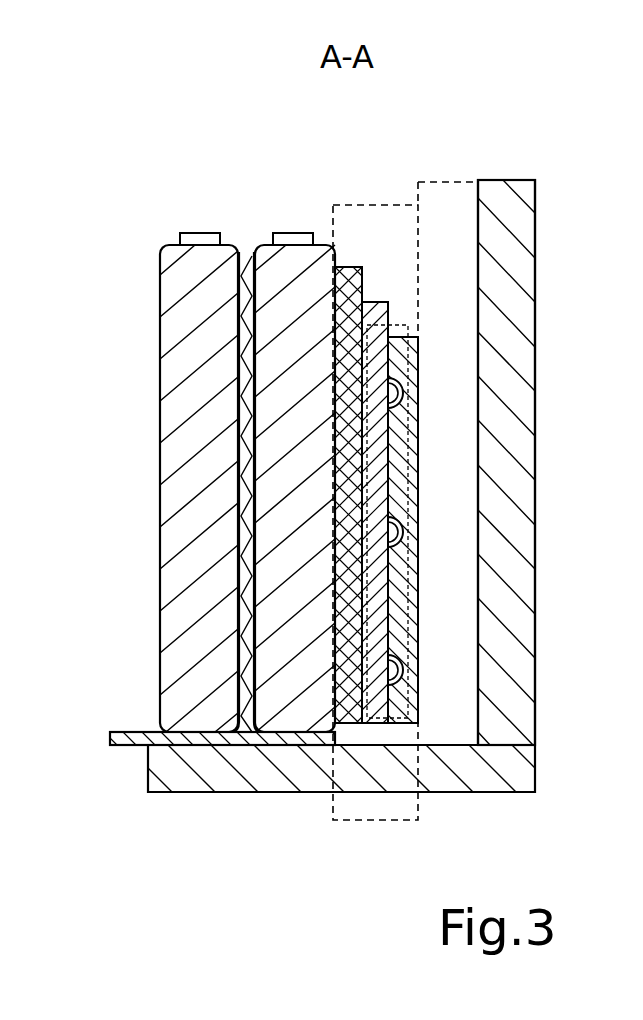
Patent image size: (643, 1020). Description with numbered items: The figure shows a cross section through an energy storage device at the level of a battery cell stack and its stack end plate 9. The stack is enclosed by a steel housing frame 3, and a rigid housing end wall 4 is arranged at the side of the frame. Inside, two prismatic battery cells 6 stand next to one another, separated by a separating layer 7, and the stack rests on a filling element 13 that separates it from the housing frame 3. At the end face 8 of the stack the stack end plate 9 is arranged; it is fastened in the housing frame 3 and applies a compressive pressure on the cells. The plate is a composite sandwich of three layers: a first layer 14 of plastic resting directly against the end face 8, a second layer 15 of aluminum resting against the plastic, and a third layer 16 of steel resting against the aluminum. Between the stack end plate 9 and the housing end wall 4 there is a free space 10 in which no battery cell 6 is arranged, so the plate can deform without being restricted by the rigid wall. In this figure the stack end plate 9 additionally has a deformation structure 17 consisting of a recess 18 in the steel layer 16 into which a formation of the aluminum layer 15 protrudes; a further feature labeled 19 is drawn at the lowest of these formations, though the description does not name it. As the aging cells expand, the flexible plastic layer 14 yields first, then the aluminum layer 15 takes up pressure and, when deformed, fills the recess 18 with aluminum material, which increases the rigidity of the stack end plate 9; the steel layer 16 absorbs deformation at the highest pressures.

The housing frame 3 is at (295, 777).
The housing end wall 4 is at (523, 238).
The battery cell 6 is at (158, 428).
The separating layer 7 is at (247, 253).
The end face 8 is at (325, 530).
The stack end plate 9 is at (377, 205).
The free space 10 is at (464, 463).
The filling element 13 is at (132, 745).
The first layer 14 is at (363, 280).
The second layer 15 is at (390, 313).
The third layer 16 is at (419, 372).
The deformation structure 17 is at (408, 598).
The recess 18 is at (411, 532).
The contact bump 19 is at (393, 684).